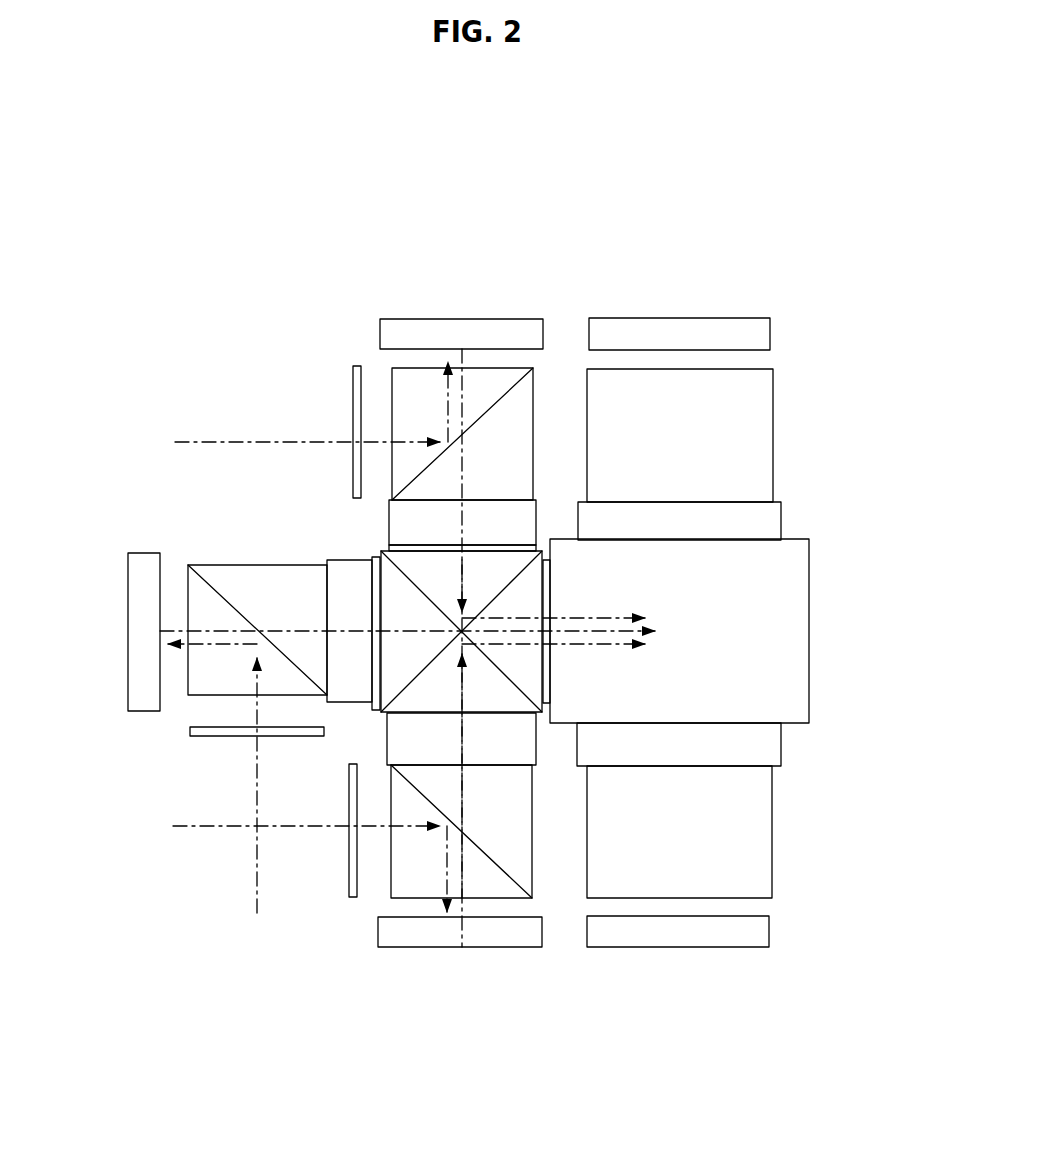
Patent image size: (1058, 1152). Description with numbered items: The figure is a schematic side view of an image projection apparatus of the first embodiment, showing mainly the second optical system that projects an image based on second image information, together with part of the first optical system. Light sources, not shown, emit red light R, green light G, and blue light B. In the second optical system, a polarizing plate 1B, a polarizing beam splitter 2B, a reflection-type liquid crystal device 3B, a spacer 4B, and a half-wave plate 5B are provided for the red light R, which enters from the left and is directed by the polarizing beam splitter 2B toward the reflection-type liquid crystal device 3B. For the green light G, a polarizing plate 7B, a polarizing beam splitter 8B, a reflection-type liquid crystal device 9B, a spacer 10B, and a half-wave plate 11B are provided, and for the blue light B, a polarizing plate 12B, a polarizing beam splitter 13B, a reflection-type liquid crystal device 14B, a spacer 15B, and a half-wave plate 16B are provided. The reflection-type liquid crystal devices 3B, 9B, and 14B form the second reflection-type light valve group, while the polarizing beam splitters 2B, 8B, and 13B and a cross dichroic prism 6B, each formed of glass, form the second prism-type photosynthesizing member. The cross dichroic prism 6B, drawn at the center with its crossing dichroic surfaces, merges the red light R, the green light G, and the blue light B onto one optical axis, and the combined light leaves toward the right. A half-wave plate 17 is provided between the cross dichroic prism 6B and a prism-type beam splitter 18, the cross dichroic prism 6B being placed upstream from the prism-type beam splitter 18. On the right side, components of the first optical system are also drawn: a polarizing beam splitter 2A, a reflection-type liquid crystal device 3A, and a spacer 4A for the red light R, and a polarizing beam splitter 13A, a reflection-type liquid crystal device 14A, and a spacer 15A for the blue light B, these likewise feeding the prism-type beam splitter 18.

The polarizing plate 1B is at (353, 378).
The polarizing beam splitter 2B is at (390, 362).
The reflection-type liquid crystal device 3B is at (430, 318).
The spacer 4B is at (388, 510).
The half-wave plate 5B is at (388, 546).
The cross dichroic prism 6B is at (380, 553).
The polarizing plate 7B is at (200, 740).
The polarizing beam splitter 8B is at (195, 697).
The reflection-type liquid crystal device 9B is at (135, 552).
The spacer 10B is at (327, 560).
The half-wave plate 11B is at (373, 558).
The polarizing plate 12B is at (348, 858).
The polarizing beam splitter 13B is at (390, 886).
The reflection-type liquid crystal device 14B is at (433, 948).
The spacer 15B is at (536, 745).
The half-wave plate 16B is at (380, 716).
The half-wave plate 17 is at (547, 557).
The prism-type beam splitter 18 is at (809, 679).
The polarizing beam splitter 2A is at (773, 420).
The reflection-type liquid crystal device 3A is at (747, 318).
The spacer 4A is at (781, 518).
The polarizing beam splitter 13A is at (772, 873).
The reflection-type liquid crystal device 14A is at (673, 948).
The spacer 15A is at (781, 740).
The red light R is at (290, 442).
The green light G is at (257, 863).
The blue light B is at (197, 826).